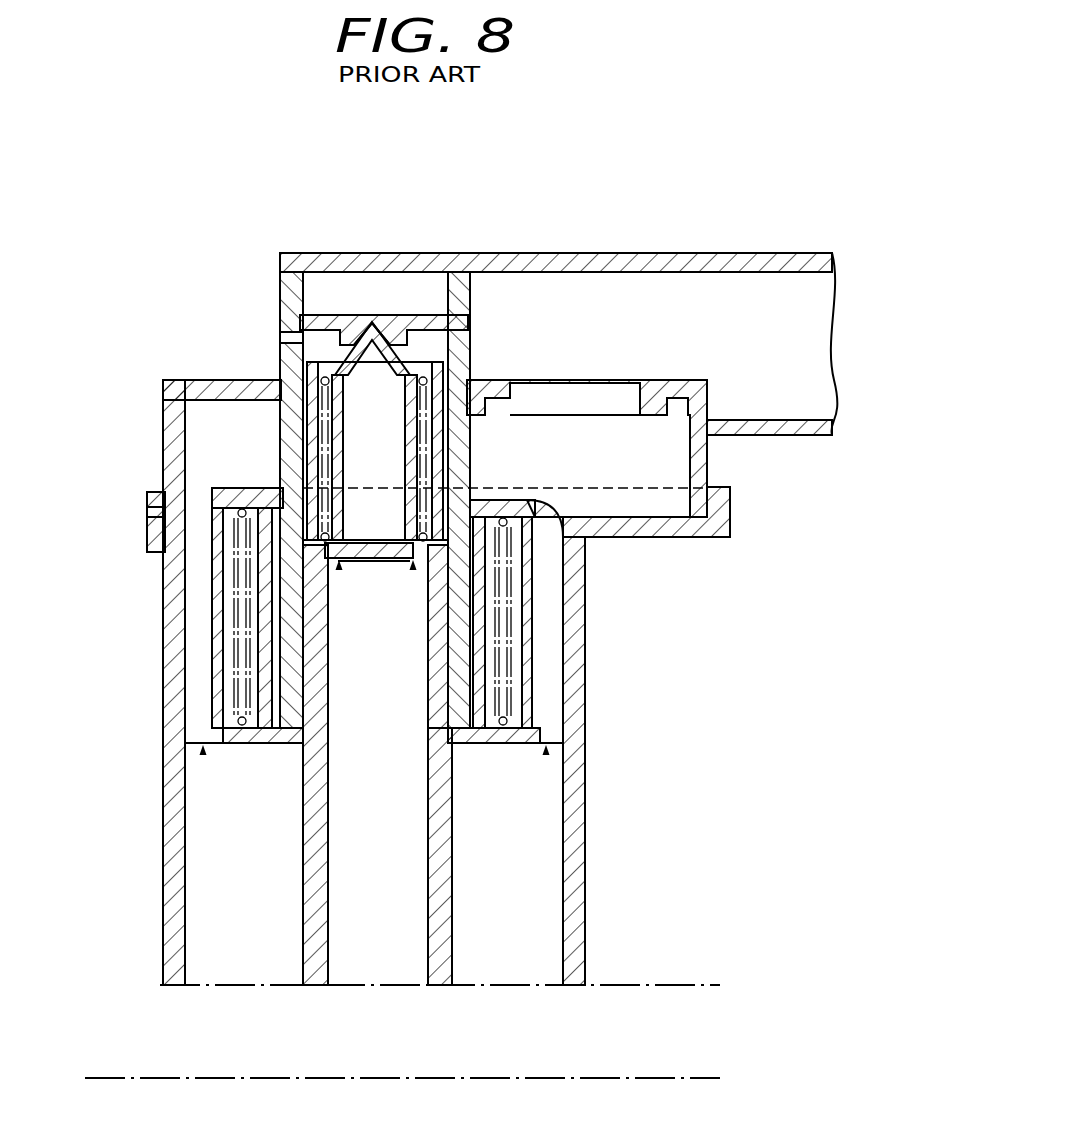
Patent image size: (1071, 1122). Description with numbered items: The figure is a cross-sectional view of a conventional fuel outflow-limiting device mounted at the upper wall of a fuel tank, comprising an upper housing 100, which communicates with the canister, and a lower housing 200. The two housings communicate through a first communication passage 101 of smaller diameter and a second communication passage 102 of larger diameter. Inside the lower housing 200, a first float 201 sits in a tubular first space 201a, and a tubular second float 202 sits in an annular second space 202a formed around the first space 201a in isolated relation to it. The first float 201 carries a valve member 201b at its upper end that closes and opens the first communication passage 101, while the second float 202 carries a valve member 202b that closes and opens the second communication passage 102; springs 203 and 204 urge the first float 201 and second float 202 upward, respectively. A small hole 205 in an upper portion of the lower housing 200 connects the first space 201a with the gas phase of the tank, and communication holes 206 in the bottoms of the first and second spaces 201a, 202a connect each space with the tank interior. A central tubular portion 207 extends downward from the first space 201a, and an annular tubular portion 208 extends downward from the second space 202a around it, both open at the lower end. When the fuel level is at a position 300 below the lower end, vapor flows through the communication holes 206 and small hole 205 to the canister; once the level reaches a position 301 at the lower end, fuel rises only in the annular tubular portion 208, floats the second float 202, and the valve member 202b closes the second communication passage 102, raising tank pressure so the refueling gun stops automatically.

The upper housing 100 is at (553, 245).
The first communication passage 101 is at (375, 308).
The second communication passage 102 is at (598, 392).
The lower housing 200 is at (152, 684).
The first float 201 is at (440, 365).
The first space 201a is at (322, 348).
The valve member 201b is at (410, 340).
The second float 202 is at (215, 605).
The second space 202a is at (220, 462).
The valve member 202b is at (640, 484).
The spring 203 is at (305, 412).
The spring 204 is at (507, 640).
The small hole 205 is at (300, 338).
The communication holes 206 is at (412, 567).
The central tubular portion 207 is at (380, 918).
The annular tubular portion 208 is at (248, 918).
The position 300 is at (426, 1077).
The position 301 is at (463, 983).